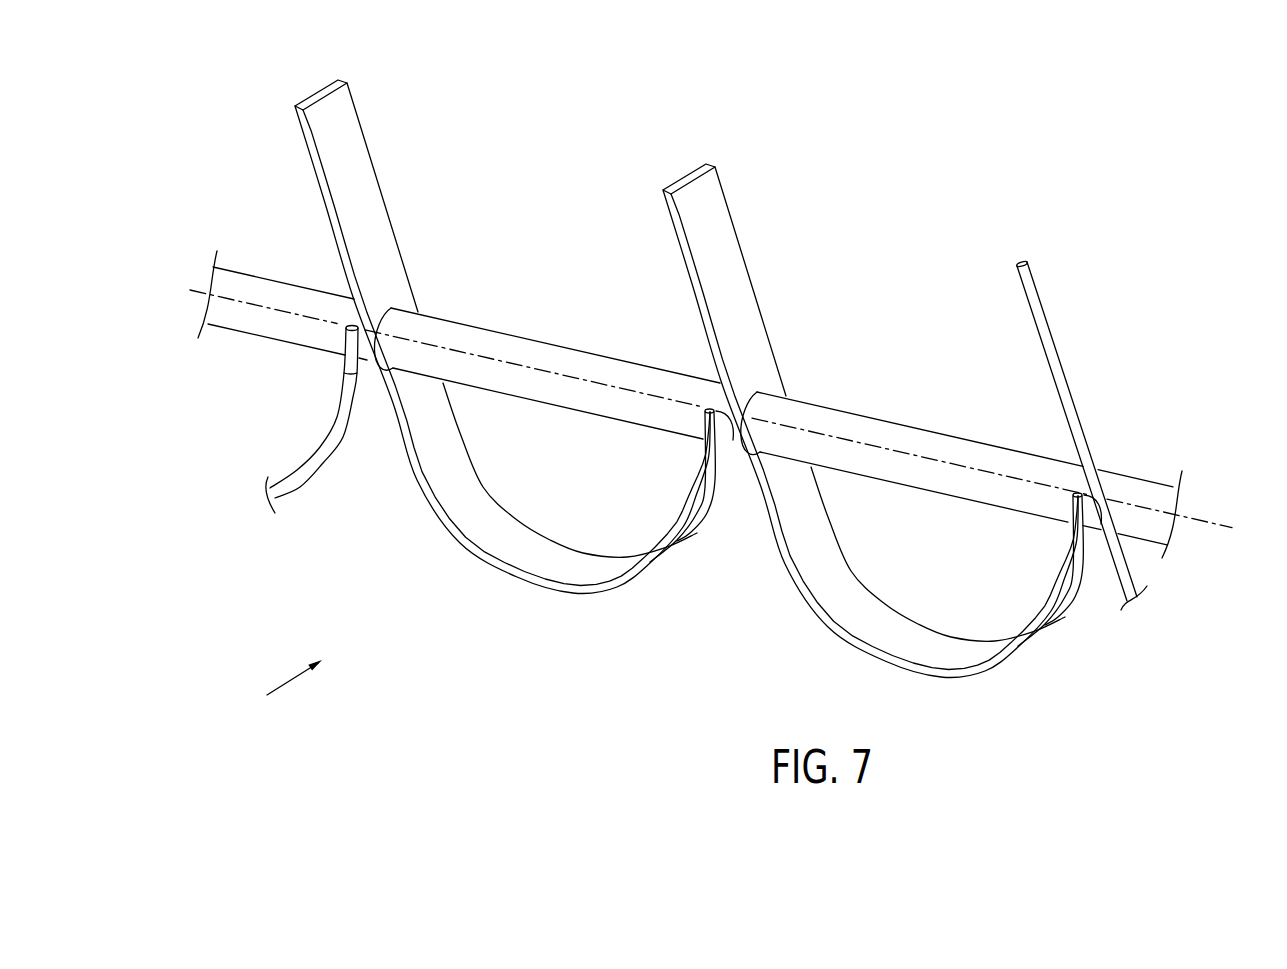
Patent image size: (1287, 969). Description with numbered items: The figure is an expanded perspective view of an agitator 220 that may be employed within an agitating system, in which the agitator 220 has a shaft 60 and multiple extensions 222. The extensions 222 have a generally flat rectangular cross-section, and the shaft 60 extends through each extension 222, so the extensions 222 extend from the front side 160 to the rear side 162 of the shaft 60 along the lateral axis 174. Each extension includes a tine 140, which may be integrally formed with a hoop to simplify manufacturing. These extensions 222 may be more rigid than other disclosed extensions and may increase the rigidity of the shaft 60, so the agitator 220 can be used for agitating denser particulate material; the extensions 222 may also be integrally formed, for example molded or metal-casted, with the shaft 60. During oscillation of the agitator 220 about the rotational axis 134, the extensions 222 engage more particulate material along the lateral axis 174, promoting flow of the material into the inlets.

The agitator 220 is at (215, 192).
The extension 222 is at (395, 107).
The tine 140 is at (345, 113).
The rear side 162 is at (428, 233).
The front side 160 is at (297, 452).
The shaft 60 is at (550, 357).
The rotational axis 134 is at (1197, 522).
The lateral axis 174 is at (288, 682).